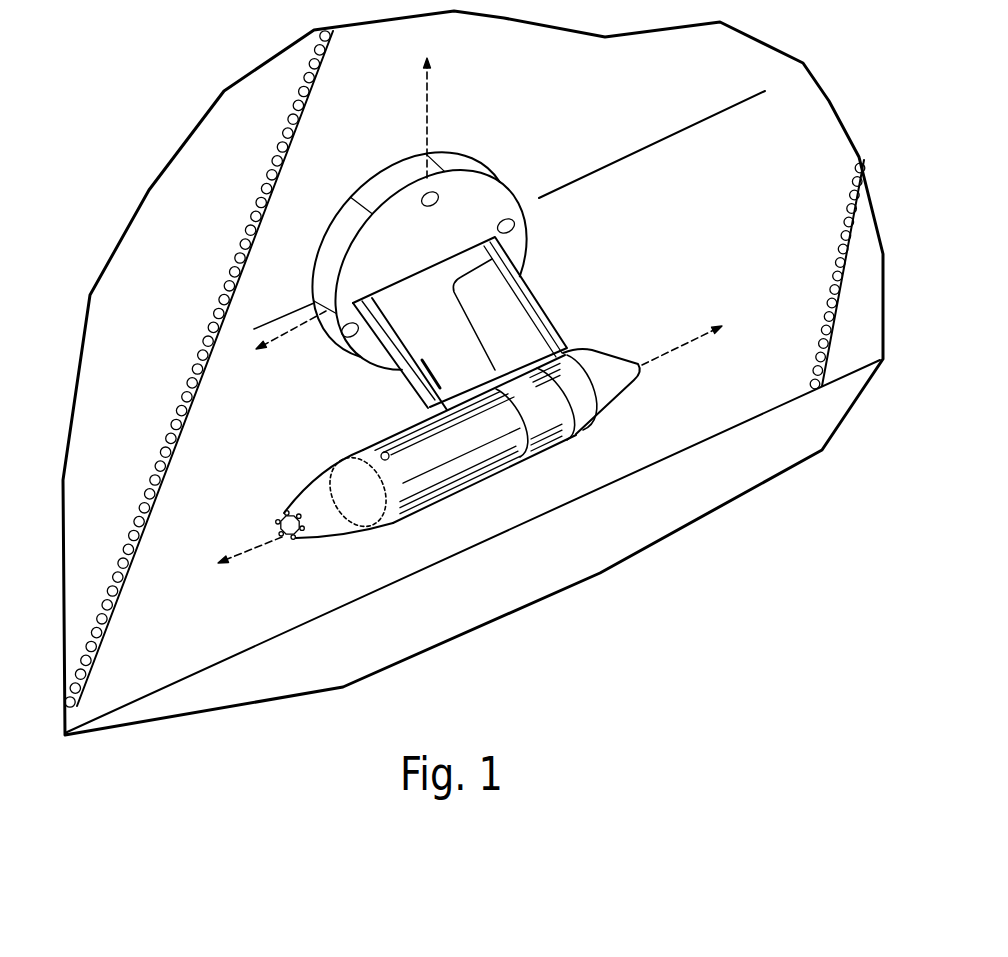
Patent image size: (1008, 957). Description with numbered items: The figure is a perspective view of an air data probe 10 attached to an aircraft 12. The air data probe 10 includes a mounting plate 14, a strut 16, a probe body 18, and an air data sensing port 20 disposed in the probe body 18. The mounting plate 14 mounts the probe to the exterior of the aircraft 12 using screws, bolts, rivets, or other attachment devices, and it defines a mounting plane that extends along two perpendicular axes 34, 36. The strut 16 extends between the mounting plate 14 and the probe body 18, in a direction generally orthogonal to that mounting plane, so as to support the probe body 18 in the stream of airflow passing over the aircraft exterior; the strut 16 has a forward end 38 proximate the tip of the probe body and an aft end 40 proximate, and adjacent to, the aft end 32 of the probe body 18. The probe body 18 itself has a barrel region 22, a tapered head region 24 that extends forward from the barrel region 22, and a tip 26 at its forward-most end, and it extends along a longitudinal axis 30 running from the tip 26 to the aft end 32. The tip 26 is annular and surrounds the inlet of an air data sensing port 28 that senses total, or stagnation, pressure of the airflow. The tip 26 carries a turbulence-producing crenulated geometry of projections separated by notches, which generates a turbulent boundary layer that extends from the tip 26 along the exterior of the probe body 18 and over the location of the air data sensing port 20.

The air data probe 10 is at (571, 302).
The aircraft 12 is at (791, 119).
The mounting plate 14 is at (514, 183).
The strut 16 is at (492, 295).
The probe body 18 is at (555, 440).
The air data sensing port 20 is at (378, 455).
The barrel region 22 is at (500, 450).
The tapered head region 24 is at (321, 547).
The tip 26 is at (277, 517).
The air data sensing port 28 is at (293, 537).
The longitudinal axis 30 is at (253, 547).
The aft end 32 is at (630, 355).
The axis 34 is at (424, 112).
The axis 36 is at (299, 328).
The forward end 38 is at (402, 377).
The aft end 40 is at (515, 264).